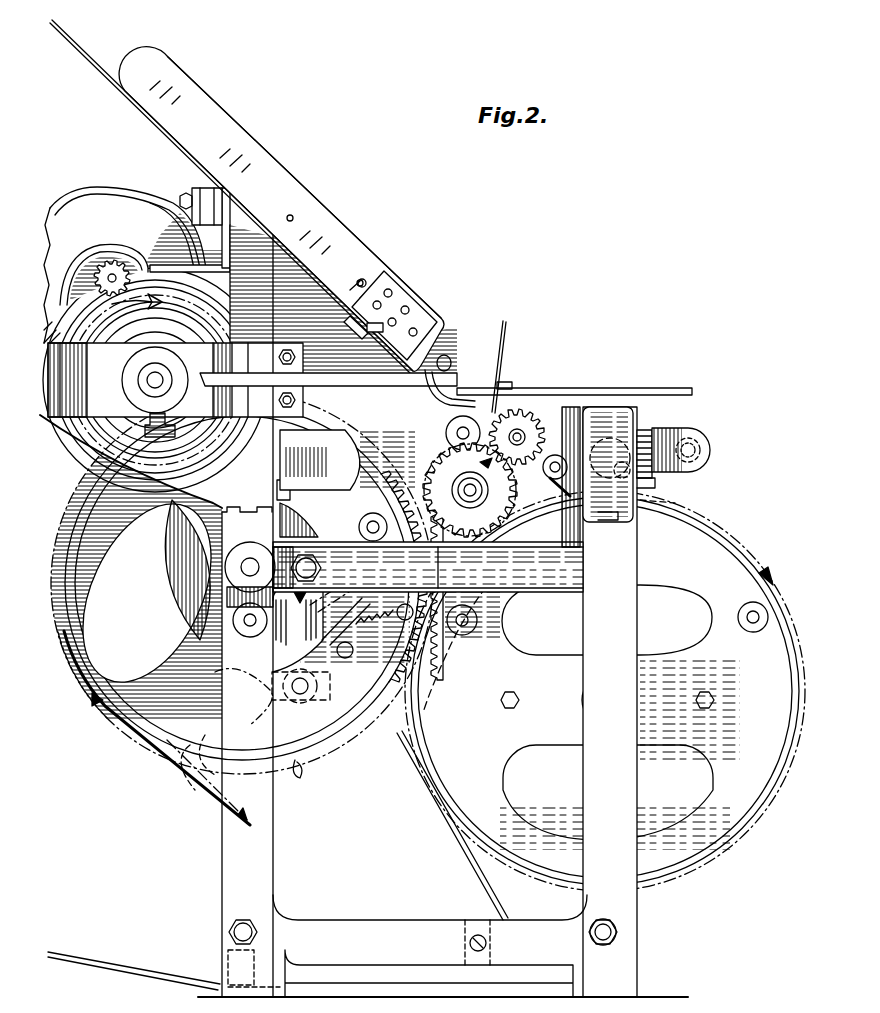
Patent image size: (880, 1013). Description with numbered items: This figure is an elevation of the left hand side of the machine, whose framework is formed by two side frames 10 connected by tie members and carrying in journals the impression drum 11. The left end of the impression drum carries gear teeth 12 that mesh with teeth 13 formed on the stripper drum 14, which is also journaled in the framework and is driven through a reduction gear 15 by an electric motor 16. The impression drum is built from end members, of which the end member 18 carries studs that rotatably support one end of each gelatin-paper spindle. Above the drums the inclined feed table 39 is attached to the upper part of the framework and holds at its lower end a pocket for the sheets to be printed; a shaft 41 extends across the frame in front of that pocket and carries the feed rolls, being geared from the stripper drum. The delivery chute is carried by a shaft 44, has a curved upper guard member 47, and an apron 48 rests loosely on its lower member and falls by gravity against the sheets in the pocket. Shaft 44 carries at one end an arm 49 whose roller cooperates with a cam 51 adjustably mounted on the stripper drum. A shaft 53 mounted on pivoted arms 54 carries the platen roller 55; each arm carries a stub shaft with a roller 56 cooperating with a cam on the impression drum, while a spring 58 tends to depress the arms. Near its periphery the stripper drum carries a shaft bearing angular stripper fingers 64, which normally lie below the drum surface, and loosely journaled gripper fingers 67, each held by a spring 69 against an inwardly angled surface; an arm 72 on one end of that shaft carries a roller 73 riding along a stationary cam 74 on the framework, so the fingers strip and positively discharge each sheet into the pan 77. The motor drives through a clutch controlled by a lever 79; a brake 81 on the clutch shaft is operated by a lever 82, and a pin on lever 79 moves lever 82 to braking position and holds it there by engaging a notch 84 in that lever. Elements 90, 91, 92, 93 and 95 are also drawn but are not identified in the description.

The side frames 10 is at (232, 855).
The impression drum 11 is at (713, 847).
The gear teeth 12 is at (442, 655).
The teeth 13 is at (405, 680).
The stripper drum 14 is at (133, 707).
The reduction gear 15 is at (137, 293).
The electric motor 16 is at (97, 195).
The end member 18 is at (713, 635).
The inclined feed table 39 is at (93, 58).
The shaft 41 is at (520, 430).
The shaft 44 is at (468, 425).
The curved upper guard member 47 is at (504, 328).
The apron 48 is at (428, 370).
The arm 49 is at (330, 458).
The cam 51 is at (285, 495).
The shaft 53 is at (608, 420).
The pivoted arms 54 is at (562, 492).
The platen roller 55 is at (655, 480).
The roller 56 is at (610, 400).
The spring 58 is at (556, 462).
The angular stripper fingers 64 is at (355, 633).
The gripper fingers 67 is at (298, 775).
The spring 69 is at (366, 614).
The arm 72 is at (378, 530).
The roller 73 is at (215, 672).
The stationary cam 74 is at (195, 598).
The pan 77 is at (97, 958).
The lever 79 is at (470, 352).
The brake 81 is at (135, 418).
The lever 82 is at (148, 418).
The notch 84 is at (673, 432).
The arm 90 is at (281, 209).
The arm edge 91 is at (215, 125).
The plate 92 is at (395, 332).
The bolt 93 is at (410, 322).
The block 95 is at (360, 325).